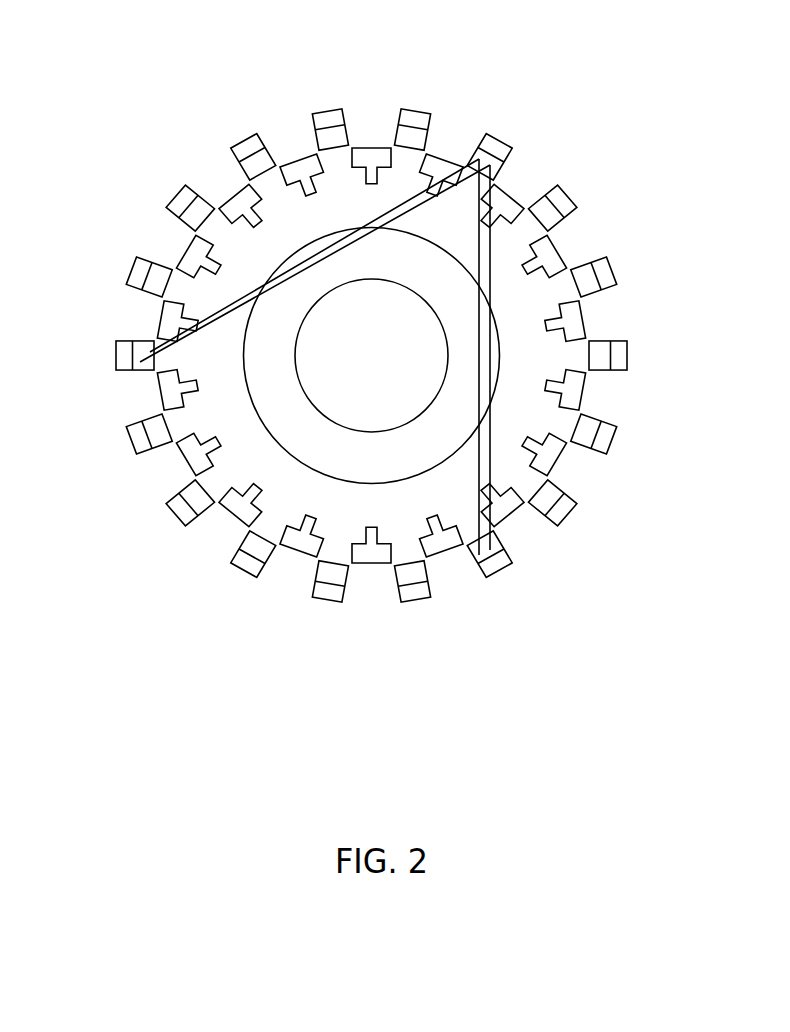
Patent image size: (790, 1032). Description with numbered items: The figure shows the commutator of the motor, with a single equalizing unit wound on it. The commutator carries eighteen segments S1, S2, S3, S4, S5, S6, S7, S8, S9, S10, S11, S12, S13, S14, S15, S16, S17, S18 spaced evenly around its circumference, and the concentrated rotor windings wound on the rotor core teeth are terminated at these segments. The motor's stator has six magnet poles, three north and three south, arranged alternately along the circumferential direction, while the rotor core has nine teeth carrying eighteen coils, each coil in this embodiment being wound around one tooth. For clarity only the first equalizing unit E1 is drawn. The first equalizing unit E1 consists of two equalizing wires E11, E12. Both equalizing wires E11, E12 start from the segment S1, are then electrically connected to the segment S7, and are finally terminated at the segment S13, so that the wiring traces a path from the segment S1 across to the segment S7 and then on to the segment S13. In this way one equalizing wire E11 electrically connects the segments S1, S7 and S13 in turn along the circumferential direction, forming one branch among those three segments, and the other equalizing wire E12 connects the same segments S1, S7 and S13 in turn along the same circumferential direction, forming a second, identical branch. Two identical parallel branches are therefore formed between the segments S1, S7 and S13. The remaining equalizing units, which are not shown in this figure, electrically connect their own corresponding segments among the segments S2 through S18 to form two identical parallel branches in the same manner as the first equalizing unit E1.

The segment S1 is at (124, 359).
The segment S2 is at (143, 275).
The segment S3 is at (185, 200).
The segment S4 is at (248, 148).
The segment S5 is at (329, 120).
The segment S6 is at (416, 120).
The segment S7 is at (493, 150).
The segment S8 is at (558, 200).
The segment S9 is at (603, 273).
The segment S10 is at (618, 353).
The segment S11 is at (603, 440).
The segment S12 is at (560, 510).
The segment S13 is at (494, 566).
The segment S14 is at (416, 590).
The segment S15 is at (327, 590).
The segment S16 is at (249, 567).
The segment S17 is at (183, 510).
The segment S18 is at (140, 440).
The first equalizing unit E1 is at (308, 284).
The equalizing wire E11 is at (262, 285).
The equalizing wire E12 is at (283, 280).